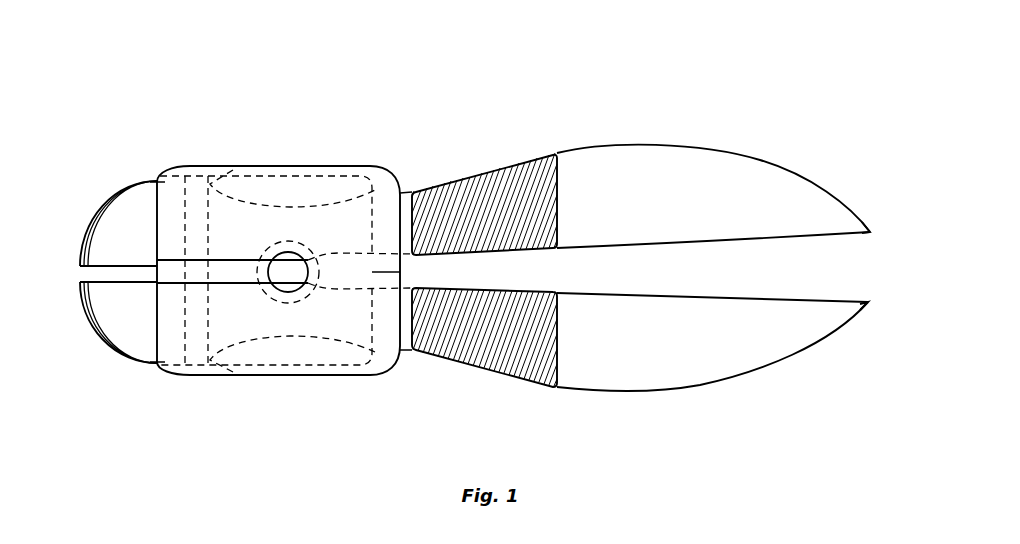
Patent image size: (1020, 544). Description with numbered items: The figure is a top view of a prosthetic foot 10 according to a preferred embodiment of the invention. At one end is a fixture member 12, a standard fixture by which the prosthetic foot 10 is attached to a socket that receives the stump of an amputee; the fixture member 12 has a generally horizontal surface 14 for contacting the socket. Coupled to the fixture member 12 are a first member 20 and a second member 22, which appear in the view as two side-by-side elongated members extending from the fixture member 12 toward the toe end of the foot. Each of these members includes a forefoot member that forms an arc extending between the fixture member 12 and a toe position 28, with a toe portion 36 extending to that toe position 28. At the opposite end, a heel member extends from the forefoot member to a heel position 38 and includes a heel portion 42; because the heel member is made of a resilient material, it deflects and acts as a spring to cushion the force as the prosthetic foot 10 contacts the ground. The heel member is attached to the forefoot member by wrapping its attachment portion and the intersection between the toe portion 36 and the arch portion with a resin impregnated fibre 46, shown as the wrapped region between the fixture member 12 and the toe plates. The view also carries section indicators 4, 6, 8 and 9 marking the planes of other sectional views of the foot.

The prosthetic foot 10 is at (722, 118).
The fixture member 12 is at (275, 378).
The generally horizontal surface 14 is at (207, 373).
The first member 20 is at (773, 190).
The second member 22 is at (752, 322).
The toe position 28 is at (868, 302).
The toe portion 36 is at (676, 215).
The heel position 38 is at (80, 284).
The heel portion 42 is at (133, 328).
The resin impregnated fibre 46 is at (445, 180).
The section line 4 is at (403, 193).
The section line 6 is at (340, 122).
The section line 8 is at (400, 340).
The section line 9 is at (508, 150).